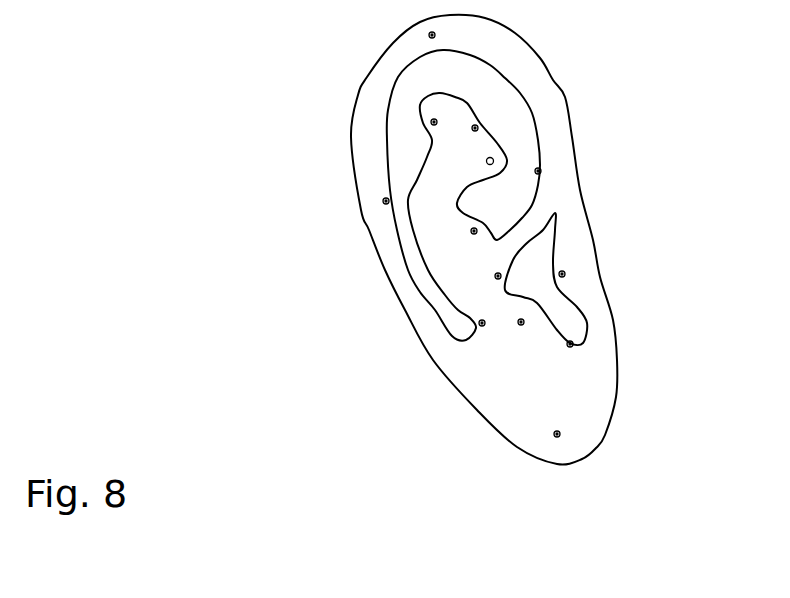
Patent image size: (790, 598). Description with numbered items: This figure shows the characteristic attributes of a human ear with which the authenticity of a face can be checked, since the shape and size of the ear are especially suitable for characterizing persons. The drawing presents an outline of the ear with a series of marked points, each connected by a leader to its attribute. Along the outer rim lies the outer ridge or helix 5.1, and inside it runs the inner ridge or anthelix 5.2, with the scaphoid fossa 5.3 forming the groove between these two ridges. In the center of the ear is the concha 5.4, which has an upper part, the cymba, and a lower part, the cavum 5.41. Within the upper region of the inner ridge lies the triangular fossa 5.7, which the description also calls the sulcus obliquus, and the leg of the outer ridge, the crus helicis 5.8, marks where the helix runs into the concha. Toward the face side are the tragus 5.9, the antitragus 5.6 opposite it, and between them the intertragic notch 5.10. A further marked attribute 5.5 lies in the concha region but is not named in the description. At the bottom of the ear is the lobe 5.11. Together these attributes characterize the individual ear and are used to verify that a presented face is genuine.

The outer ridge (helix) 5.1 is at (432, 35).
The inner ridge (anthelix) 5.2 is at (434, 122).
The scaphoid fossa 5.3 is at (386, 201).
The concha 5.4 is at (474, 231).
The lower part of the concha (cavum) 5.41 is at (498, 276).
The concha position near crus 5.5 is at (482, 323).
The antitragus 5.6 is at (521, 322).
The triangular fossa (fossa triangularis) 5.7 is at (475, 128).
The leg of the outer ridge (crus helicis) 5.8 is at (538, 171).
The tragus 5.9 is at (562, 274).
The notch between the tragi (incisura intertragica) 5.10 is at (570, 344).
The lobe (lobulus auriculae) 5.11 is at (557, 434).